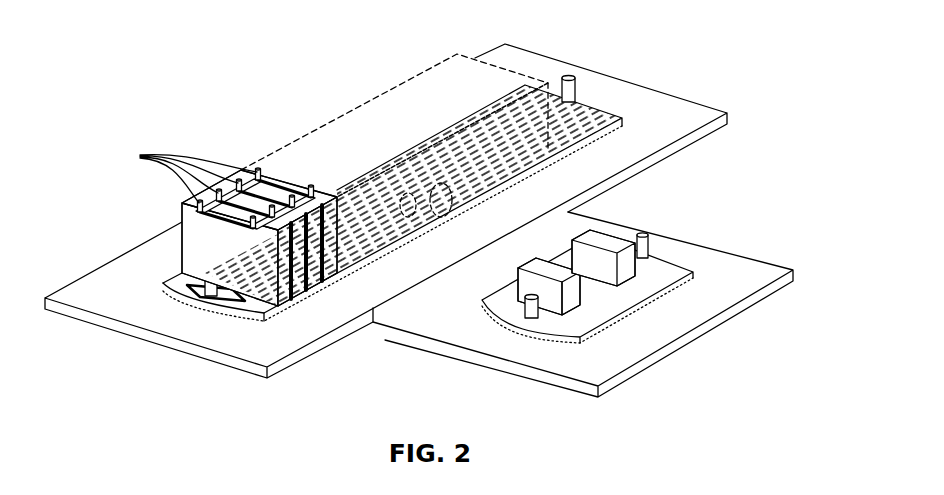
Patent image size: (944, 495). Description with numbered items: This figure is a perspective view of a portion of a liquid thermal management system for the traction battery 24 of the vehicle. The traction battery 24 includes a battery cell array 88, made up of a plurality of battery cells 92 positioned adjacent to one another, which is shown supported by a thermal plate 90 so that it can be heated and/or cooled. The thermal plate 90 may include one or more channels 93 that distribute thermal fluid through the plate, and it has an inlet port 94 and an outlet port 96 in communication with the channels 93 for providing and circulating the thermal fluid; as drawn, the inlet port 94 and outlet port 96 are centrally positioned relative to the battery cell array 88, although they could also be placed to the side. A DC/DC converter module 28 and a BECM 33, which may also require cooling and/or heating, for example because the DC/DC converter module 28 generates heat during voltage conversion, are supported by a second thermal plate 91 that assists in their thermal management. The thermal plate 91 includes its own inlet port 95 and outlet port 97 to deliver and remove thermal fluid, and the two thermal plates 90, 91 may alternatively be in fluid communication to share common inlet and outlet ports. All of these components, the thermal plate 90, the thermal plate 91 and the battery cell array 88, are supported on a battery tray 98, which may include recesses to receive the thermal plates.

The traction battery 24 is at (297, 109).
The DC/DC converter module 28 is at (540, 268).
The BECM 33 is at (594, 233).
The battery cell array 88 is at (399, 80).
The thermal plate 90 is at (258, 304).
The thermal plate 91 is at (605, 301).
The battery cells 92 is at (183, 175).
The channels 93 is at (410, 217).
The inlet port 94 is at (622, 118).
The inlet port 95 is at (642, 233).
The outlet port 96 is at (226, 300).
The outlet port 97 is at (524, 296).
The battery tray 98 is at (697, 116).